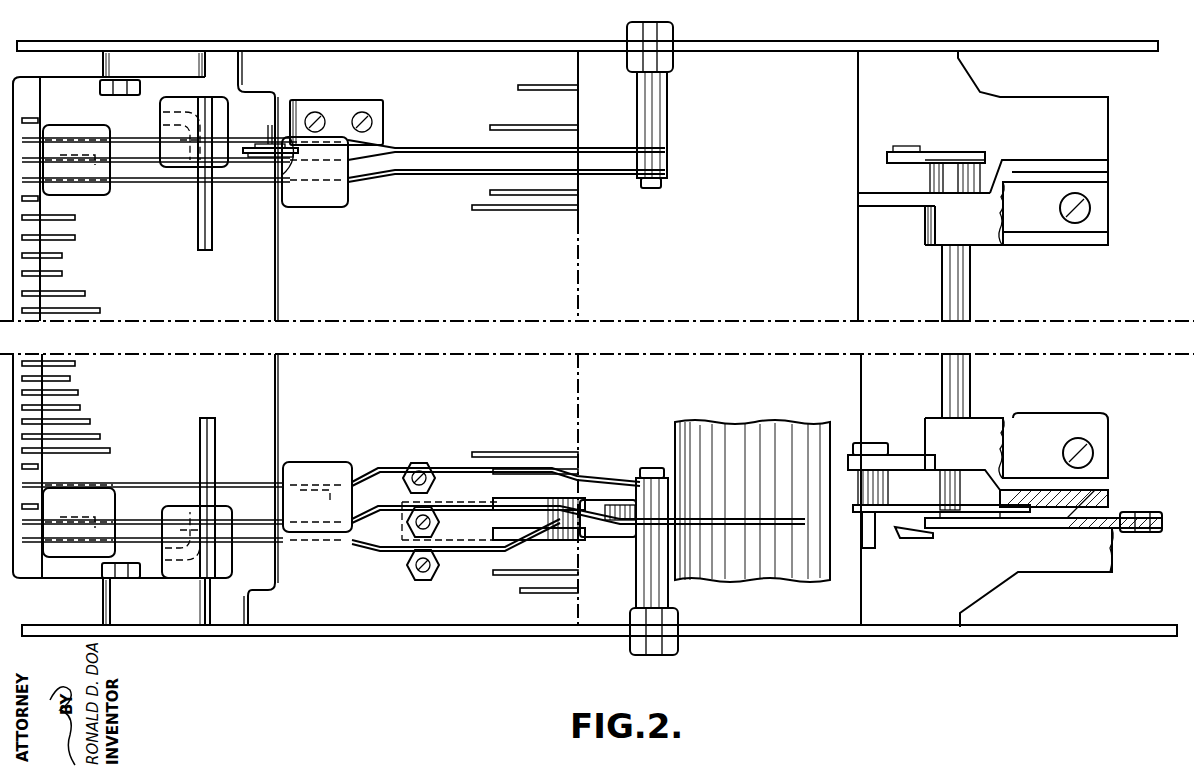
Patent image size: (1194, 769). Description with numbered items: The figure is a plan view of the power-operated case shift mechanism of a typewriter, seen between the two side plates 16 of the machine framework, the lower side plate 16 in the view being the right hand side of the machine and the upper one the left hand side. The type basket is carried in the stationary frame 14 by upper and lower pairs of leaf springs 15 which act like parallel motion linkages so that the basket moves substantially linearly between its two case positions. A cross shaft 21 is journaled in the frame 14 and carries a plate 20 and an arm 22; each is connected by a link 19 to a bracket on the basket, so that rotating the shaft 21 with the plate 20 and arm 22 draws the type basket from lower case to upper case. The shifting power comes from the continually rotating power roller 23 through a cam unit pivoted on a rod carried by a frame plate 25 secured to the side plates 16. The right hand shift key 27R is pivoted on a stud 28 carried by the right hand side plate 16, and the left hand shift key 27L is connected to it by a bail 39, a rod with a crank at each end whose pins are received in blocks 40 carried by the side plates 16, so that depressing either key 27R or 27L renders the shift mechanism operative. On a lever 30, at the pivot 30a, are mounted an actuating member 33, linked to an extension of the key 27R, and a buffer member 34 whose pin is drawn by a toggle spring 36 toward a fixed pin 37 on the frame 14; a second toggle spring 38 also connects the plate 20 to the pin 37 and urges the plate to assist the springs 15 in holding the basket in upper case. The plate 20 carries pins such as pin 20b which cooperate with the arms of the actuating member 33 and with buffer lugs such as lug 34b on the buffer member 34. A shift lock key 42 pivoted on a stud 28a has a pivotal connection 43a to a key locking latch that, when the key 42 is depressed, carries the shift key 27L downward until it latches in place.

The stationary frame 14 is at (980, 92).
The leaf springs 15 is at (1015, 215).
The side plate 16 is at (757, 50).
The link 19 is at (915, 161).
The plate 20 is at (1045, 507).
The pin 20b is at (950, 528).
The cross shaft 21 is at (968, 305).
The arm 22 is at (940, 152).
The power roller 23 is at (740, 435).
The frame plate 25 is at (408, 603).
The left hand shift key 27L is at (366, 168).
The right hand shift key 27R is at (256, 525).
The stud 28 is at (648, 466).
The stud 28a is at (652, 190).
The lever 30 is at (1130, 518).
The pivot 30a is at (1145, 533).
The actuating member 33 is at (1075, 530).
The buffer member 34 is at (1100, 518).
The buffer lug 34b is at (975, 526).
The toggle spring 36 is at (900, 536).
The fixed pin 37 is at (875, 548).
The toggle spring 38 is at (925, 505).
The bail 39 is at (205, 228).
The blocks 40 is at (188, 66).
The shift lock key 42 is at (166, 125).
The pivotal connection 43a is at (258, 135).